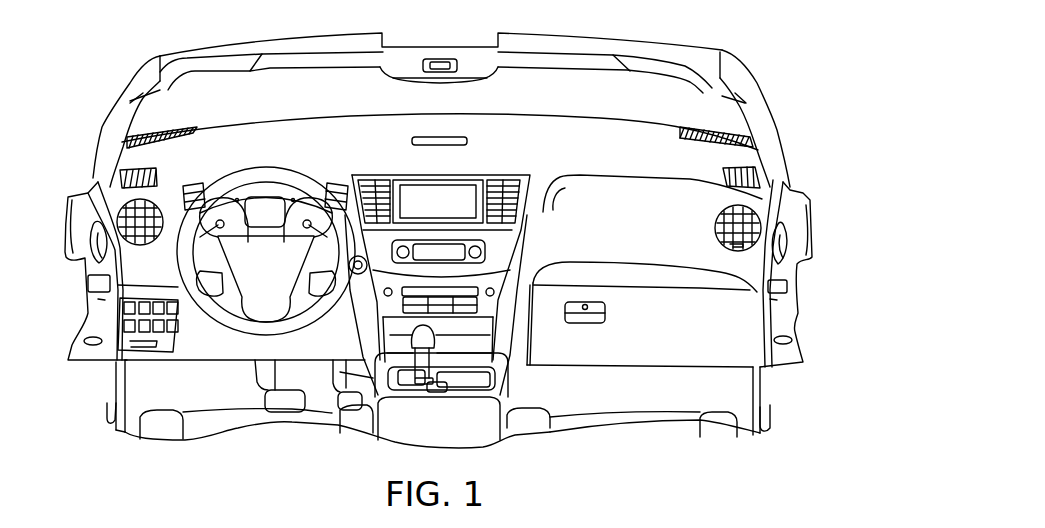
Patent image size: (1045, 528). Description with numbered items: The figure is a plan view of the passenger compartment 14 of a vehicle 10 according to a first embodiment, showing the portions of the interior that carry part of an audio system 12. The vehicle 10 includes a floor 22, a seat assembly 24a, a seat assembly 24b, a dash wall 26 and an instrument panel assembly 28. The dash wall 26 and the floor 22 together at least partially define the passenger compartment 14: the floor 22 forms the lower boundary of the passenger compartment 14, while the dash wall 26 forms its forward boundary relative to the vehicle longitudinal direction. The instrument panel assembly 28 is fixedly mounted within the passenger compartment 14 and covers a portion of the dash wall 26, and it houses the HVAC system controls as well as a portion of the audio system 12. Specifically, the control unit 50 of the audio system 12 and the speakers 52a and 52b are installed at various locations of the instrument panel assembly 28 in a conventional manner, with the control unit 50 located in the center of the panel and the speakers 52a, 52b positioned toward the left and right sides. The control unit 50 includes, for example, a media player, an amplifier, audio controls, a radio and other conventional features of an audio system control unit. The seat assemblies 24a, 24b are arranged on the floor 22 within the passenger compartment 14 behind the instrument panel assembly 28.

The vehicle 10 is at (688, 18).
The audio system 12 is at (438, 201).
The passenger compartment 14 is at (730, 388).
The floor 22 is at (130, 430).
The seat assembly 24a is at (668, 428).
The seat assembly 24b is at (218, 424).
The dash wall 26 is at (140, 385).
The instrument panel assembly 28 is at (273, 146).
The control unit 50 is at (463, 240).
The speaker 52a is at (138, 173).
The speaker 52b is at (750, 171).